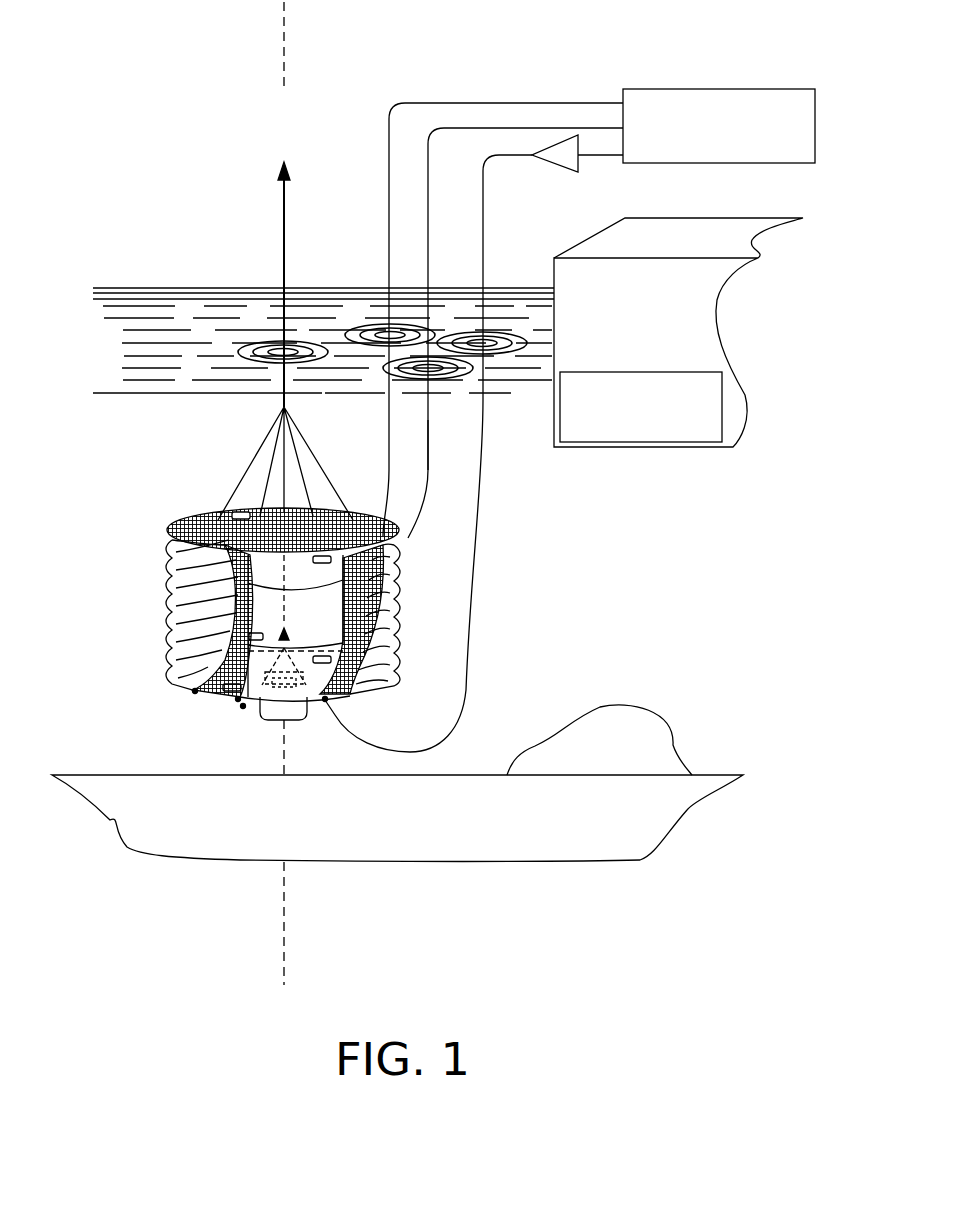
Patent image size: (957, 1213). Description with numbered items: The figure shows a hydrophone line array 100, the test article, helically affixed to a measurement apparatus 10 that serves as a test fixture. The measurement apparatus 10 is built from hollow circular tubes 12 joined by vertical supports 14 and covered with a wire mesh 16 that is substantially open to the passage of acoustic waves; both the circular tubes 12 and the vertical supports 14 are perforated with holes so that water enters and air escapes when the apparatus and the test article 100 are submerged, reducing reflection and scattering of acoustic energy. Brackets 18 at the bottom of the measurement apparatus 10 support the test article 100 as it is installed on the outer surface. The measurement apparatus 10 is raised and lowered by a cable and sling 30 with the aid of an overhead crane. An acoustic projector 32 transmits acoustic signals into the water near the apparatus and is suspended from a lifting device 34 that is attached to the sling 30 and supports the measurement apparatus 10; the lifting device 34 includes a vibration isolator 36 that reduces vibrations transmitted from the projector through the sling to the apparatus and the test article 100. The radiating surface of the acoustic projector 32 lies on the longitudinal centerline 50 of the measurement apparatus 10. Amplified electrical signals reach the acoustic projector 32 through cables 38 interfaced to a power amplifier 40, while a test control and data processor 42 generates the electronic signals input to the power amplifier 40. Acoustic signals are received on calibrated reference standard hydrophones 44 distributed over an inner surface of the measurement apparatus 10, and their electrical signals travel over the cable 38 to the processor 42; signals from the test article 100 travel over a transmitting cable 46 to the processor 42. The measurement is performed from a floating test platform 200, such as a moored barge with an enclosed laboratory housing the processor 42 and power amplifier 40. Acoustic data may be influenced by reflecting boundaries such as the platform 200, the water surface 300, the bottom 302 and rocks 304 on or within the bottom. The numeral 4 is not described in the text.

The sensors 4 is at (212, 522).
The measurement apparatus 10 is at (178, 468).
The hollow circular tubes 12 is at (190, 520).
The vertical supports 14 is at (325, 700).
The wire mesh 16 is at (193, 692).
The brackets 18 is at (242, 708).
The cable and sling 30 is at (282, 225).
The acoustic projector 32 is at (278, 722).
The lifting device 34 is at (247, 467).
The vibration isolator 36 is at (272, 634).
The cables 38 is at (436, 103).
The power amplifier 40 is at (552, 168).
The test control and data processor 42 is at (720, 89).
The calibrated reference standard hydrophones 44 is at (236, 700).
The transmitting cable 46 is at (430, 490).
The longitudinal centerline 50 is at (283, 33).
The hydrophone line array 100 is at (168, 566).
The floating test platform 200 is at (675, 447).
The water surface 300 is at (137, 288).
The bottom 302 is at (465, 775).
The rocks 304 is at (643, 706).